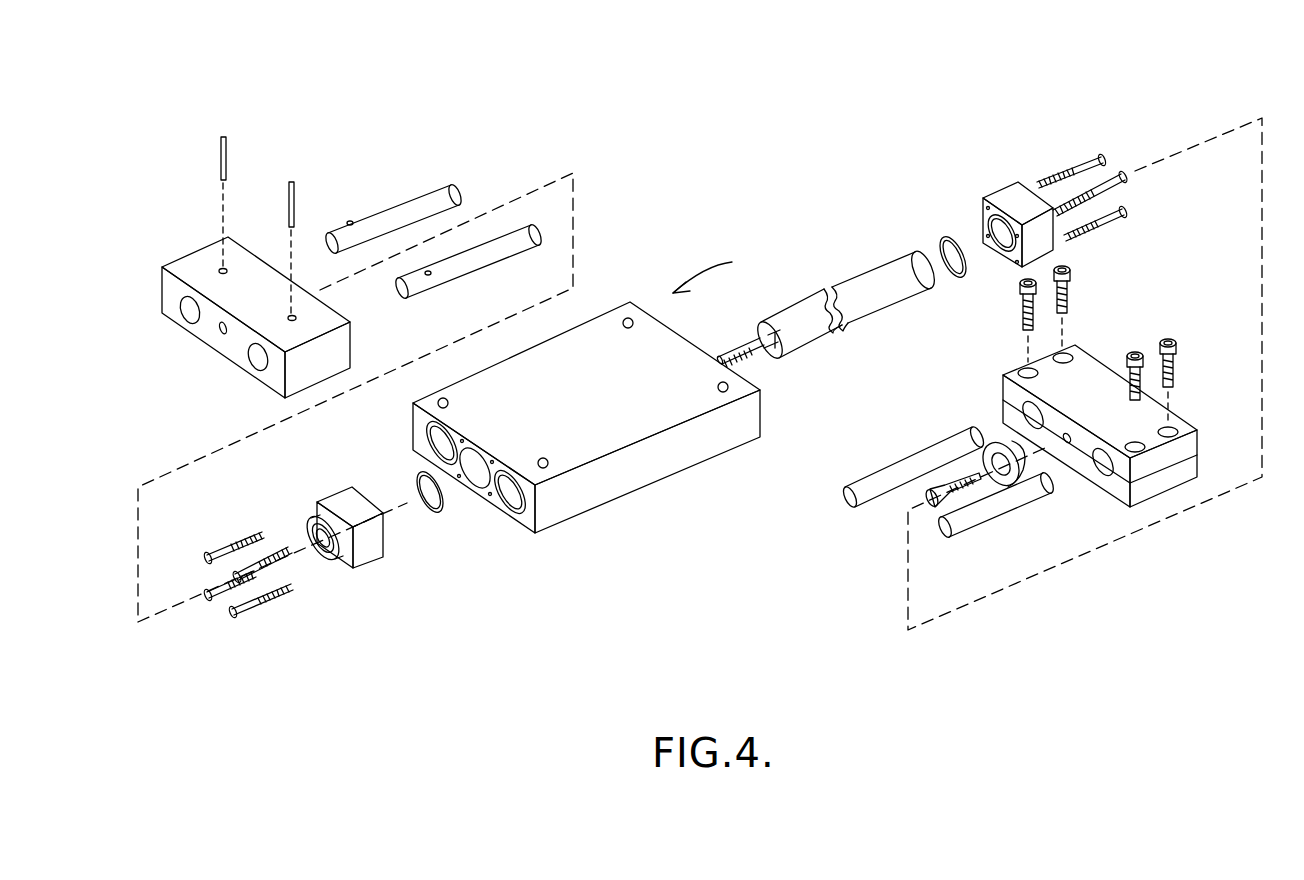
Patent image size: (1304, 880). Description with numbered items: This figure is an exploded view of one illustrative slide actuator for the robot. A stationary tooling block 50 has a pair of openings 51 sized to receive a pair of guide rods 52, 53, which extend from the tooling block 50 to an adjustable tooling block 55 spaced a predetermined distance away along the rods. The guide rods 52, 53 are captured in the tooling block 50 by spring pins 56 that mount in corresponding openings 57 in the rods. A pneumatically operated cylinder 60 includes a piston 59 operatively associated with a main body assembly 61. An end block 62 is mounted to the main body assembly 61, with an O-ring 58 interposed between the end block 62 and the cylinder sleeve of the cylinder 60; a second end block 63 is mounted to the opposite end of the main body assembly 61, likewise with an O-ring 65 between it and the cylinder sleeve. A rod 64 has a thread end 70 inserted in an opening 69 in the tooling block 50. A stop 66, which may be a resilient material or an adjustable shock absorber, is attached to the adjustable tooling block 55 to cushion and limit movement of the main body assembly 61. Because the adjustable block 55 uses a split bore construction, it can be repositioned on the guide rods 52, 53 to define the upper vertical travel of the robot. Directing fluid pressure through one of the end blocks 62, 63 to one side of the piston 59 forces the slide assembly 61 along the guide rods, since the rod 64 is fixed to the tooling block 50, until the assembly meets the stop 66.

The stationary tooling block 50 is at (257, 285).
The openings 51 is at (183, 317).
The guide rod 52 is at (418, 193).
The guide rod 53 is at (510, 236).
The adjustable tooling block 55 is at (1190, 430).
The spring pins 56 is at (228, 141).
The openings 57 is at (350, 221).
The O-ring 58 is at (440, 504).
The piston 59 is at (885, 289).
The pneumatically operated cylinder 60 is at (720, 270).
The main body assembly 61 is at (652, 468).
The end block 62 is at (377, 551).
The second end block 63 is at (1022, 197).
The rod 64 is at (772, 348).
The O-ring 65 is at (948, 285).
The stop 66 is at (1030, 462).
The opening 69 is at (227, 337).
The thread end 70 is at (748, 345).